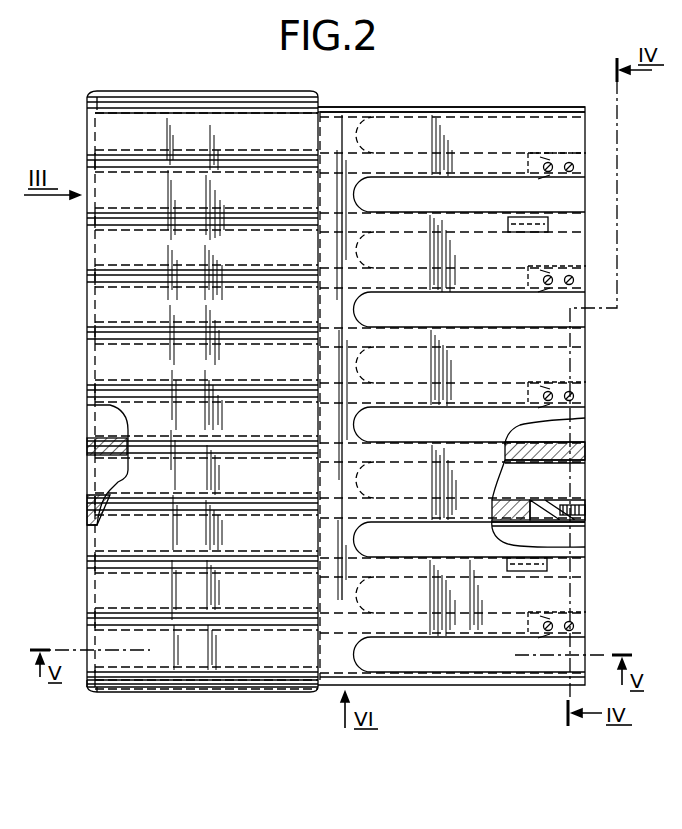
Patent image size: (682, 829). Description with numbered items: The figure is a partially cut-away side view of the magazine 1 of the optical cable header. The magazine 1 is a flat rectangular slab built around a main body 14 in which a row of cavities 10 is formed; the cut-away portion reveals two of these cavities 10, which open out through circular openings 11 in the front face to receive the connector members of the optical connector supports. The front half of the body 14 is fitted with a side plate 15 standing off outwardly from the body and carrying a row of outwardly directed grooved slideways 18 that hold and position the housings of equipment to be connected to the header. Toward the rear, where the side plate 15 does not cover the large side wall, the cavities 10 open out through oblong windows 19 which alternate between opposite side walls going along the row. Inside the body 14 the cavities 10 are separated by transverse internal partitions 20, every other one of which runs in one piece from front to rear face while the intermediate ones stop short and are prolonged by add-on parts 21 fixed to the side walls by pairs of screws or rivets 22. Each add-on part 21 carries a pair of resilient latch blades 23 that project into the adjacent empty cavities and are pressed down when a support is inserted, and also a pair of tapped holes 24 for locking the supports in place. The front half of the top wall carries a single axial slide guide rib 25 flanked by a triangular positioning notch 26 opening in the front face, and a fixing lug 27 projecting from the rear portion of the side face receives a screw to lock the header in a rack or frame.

The magazine 1 is at (588, 602).
The cavities 10 is at (100, 423).
The circular openings 11 is at (88, 523).
The main body 14 is at (362, 108).
The side plate 15 is at (235, 130).
The grooved slideway 18 is at (132, 222).
The oblong window 19 is at (447, 665).
The internal partitions 20 is at (573, 455).
The add-on parts 21 is at (580, 400).
The screws or rivets 22 is at (572, 391).
The resilient latch blade 23 is at (533, 529).
The tapped hole 24 is at (587, 511).
The slide guide rib 25 is at (174, 93).
The triangular notch 26 is at (88, 98).
The fixing lug 27 is at (540, 222).